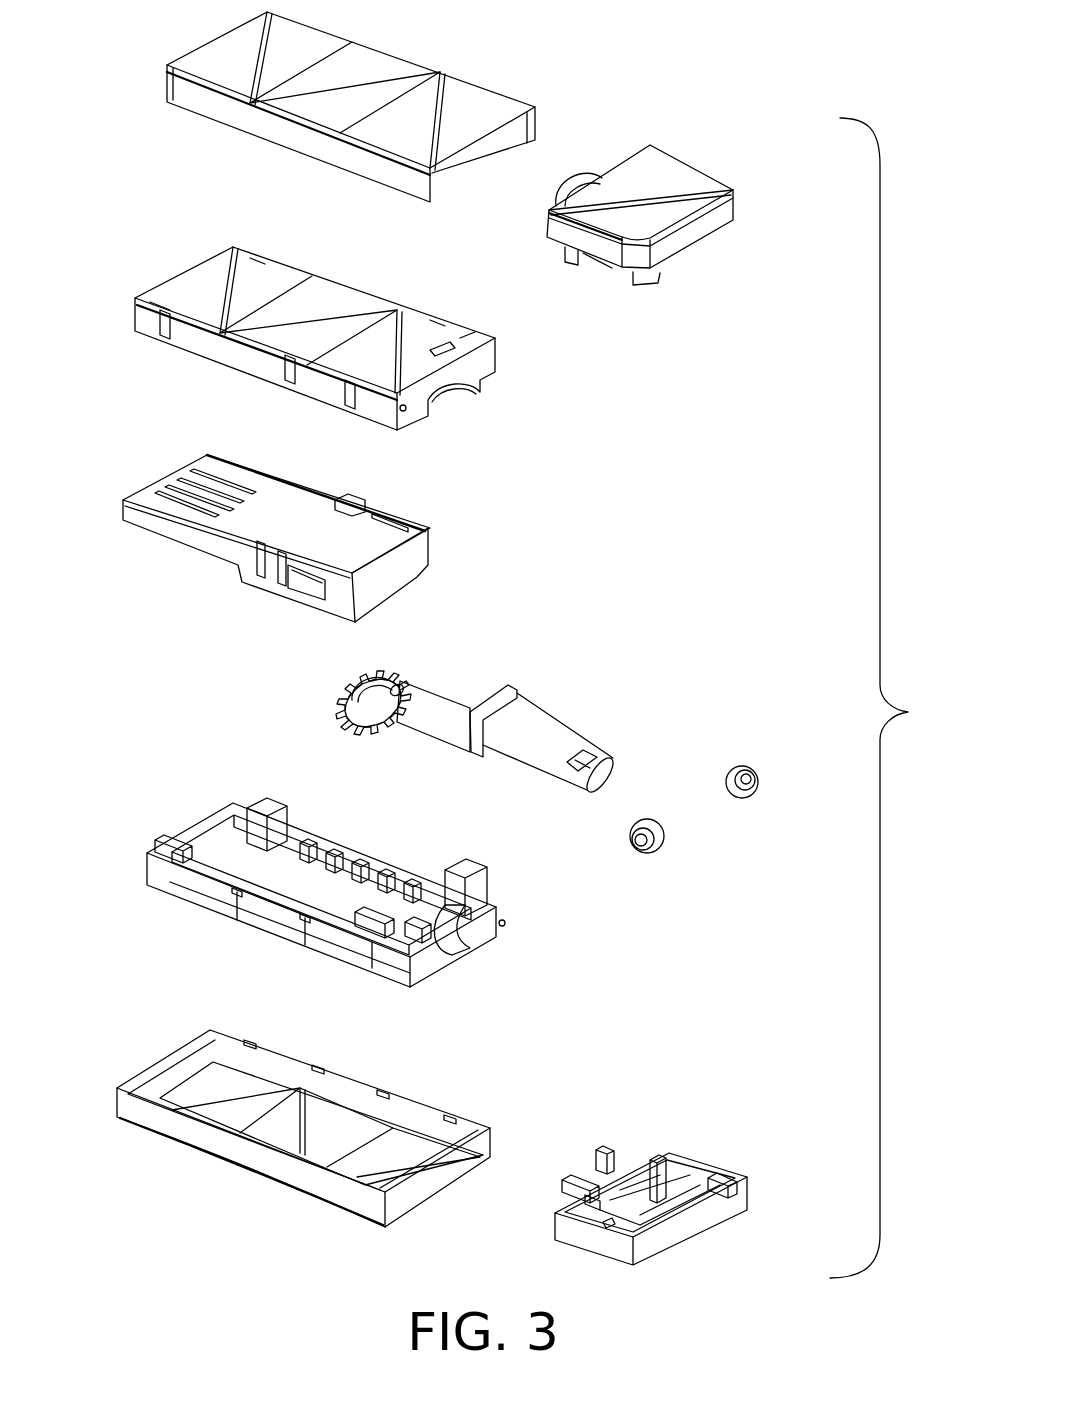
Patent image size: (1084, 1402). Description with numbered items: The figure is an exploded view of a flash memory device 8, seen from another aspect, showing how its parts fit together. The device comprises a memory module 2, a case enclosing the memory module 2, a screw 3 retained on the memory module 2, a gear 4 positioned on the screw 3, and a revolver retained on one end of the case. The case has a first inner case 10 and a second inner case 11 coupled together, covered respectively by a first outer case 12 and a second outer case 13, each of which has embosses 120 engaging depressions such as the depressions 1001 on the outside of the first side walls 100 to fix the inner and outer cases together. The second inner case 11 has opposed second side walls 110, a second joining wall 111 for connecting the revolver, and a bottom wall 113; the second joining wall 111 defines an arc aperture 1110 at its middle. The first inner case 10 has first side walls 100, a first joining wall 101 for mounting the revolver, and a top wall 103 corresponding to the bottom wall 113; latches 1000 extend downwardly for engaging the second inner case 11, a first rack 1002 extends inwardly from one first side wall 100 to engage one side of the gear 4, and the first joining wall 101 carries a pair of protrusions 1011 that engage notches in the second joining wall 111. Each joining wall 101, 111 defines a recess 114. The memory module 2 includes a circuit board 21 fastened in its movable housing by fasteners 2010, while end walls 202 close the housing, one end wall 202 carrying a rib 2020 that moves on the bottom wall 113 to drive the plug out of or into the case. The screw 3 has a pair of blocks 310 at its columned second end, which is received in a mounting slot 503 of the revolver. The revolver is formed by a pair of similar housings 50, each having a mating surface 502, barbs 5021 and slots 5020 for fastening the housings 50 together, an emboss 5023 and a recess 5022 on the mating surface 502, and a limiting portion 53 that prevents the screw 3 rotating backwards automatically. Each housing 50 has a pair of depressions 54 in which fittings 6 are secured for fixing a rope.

The second outer case 13 is at (462, 45).
The housing 50 is at (722, 148).
The second inner case 11 is at (328, 323).
The bottom wall 113 is at (313, 320).
The second joining wall 111 is at (488, 360).
The arc aperture 1110 is at (445, 388).
The recess 114 is at (406, 410).
The memory module 2 is at (292, 534).
The circuit board 21 is at (268, 505).
The fastener 2010 is at (345, 505).
The rib 2020 is at (330, 590).
The end wall 202 is at (370, 592).
The gear 4 is at (345, 685).
The screw 3 is at (531, 734).
The block 310 is at (580, 765).
The fitting 6 is at (755, 798).
The first inner case 10 is at (335, 882).
The latch 1000 is at (250, 790).
The first rack 1002 is at (352, 857).
The first side wall 100 is at (418, 880).
The top wall 103 is at (225, 860).
The protrusion 1011 is at (490, 905).
The second side wall 110 is at (455, 940).
The first joining wall 101 is at (425, 970).
The depression 1001 is at (310, 935).
The first outer case 12 is at (281, 1111).
The emboss 120 is at (320, 1068).
The flash memory device 8 is at (888, 698).
The slot 5020 is at (580, 1187).
The barb 5021 is at (720, 1165).
The recess 5022 is at (608, 1150).
The emboss 5023 is at (572, 1172).
The limiting portion 53 is at (640, 1165).
The depression 54 is at (603, 1222).
The mating surface 502 is at (680, 1215).
The mounting slot 503 is at (690, 1205).